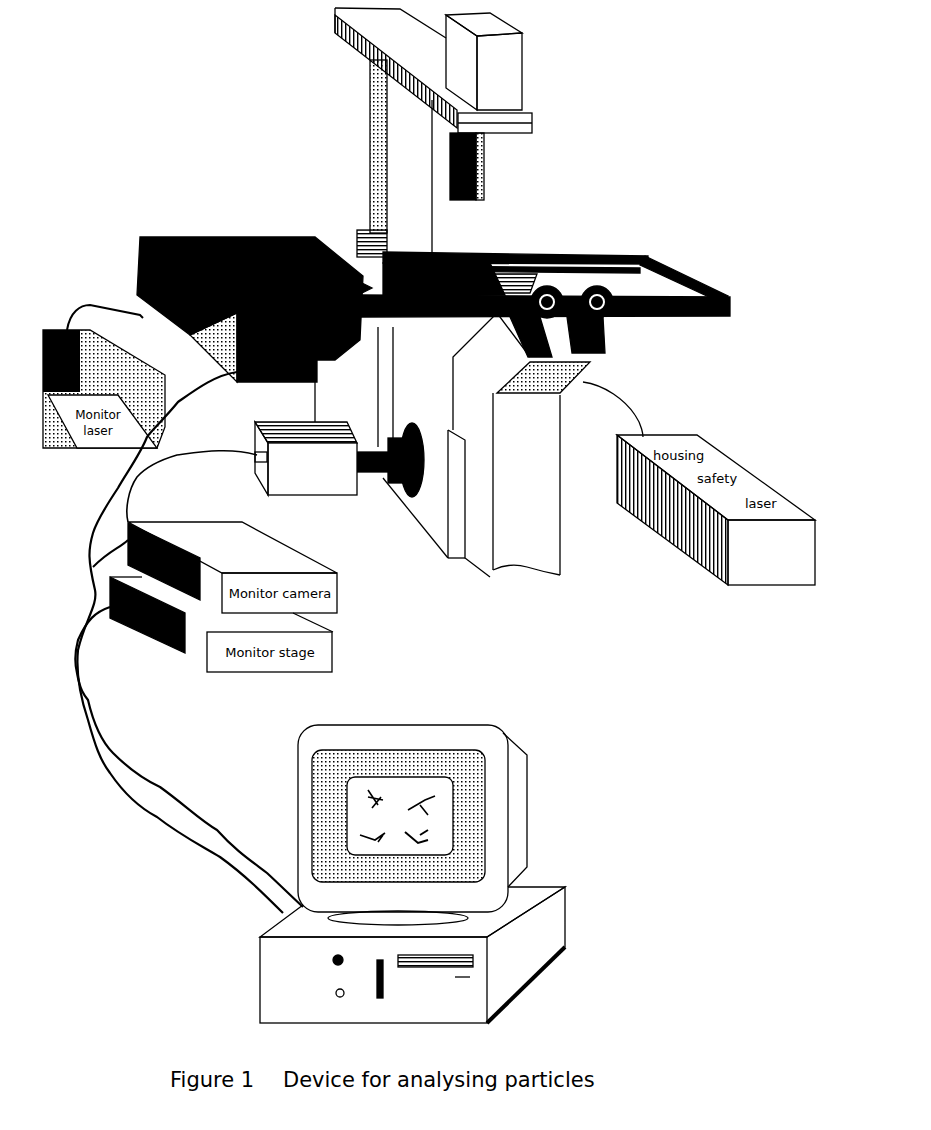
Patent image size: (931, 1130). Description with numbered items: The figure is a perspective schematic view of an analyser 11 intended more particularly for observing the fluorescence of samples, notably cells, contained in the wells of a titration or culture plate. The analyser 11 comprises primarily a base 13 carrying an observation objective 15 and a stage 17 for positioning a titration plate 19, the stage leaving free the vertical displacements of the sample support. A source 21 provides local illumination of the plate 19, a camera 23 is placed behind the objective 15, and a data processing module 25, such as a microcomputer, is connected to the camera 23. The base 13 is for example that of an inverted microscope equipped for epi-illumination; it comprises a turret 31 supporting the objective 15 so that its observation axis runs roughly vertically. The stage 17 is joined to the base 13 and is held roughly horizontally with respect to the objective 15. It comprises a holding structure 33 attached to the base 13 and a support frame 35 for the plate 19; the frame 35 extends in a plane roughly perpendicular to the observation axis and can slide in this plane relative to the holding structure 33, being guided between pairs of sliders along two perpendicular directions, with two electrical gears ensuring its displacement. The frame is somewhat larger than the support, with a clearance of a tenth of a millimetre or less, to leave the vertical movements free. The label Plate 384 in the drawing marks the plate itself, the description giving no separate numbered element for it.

The analyser 11 is at (575, 253).
The base 13 is at (513, 445).
The observation objective 15 is at (460, 330).
The stage 17 is at (545, 294).
The titration plate 19 is at (524, 107).
The source of local illumination 21 is at (250, 309).
The camera 23 is at (306, 445).
The data processing module 25 is at (412, 874).
The turret 31 is at (395, 380).
The holding structure 33 is at (616, 325).
The support frame 35 is at (572, 285).
The plate 384 is at (540, 254).